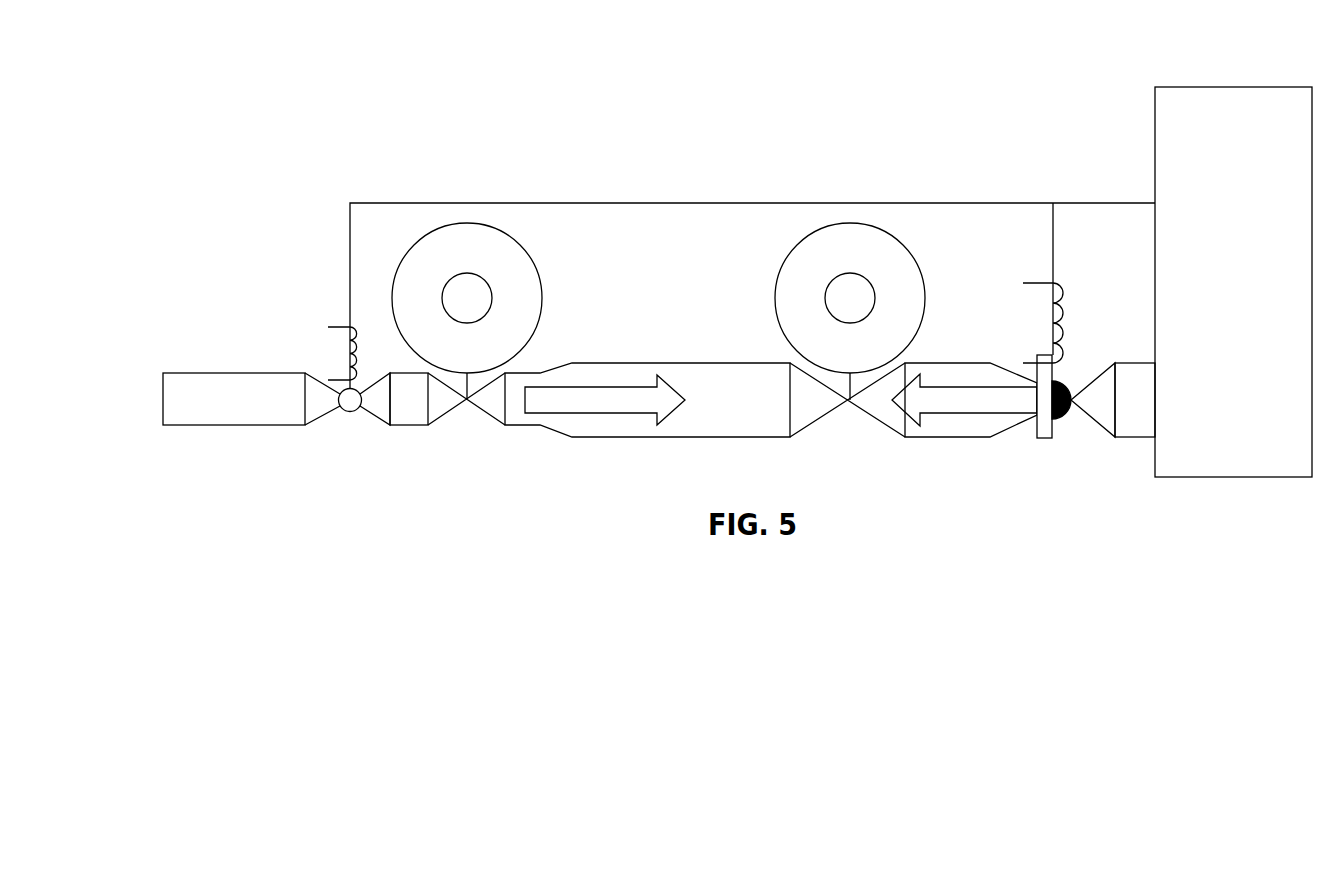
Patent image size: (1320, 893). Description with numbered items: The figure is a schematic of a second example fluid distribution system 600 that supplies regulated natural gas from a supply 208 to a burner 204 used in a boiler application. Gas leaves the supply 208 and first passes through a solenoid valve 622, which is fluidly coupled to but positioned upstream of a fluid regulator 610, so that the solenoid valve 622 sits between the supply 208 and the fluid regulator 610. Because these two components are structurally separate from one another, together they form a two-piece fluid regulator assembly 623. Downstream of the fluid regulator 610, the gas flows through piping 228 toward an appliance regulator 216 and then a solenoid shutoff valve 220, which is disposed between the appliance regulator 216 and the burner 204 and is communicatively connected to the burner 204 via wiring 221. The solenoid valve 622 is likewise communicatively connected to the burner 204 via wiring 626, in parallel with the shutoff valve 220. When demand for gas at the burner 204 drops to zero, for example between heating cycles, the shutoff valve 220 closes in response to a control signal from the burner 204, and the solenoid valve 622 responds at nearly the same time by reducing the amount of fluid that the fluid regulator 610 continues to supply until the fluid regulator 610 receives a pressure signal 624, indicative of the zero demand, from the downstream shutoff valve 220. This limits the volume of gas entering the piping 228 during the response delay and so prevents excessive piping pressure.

The fluid distribution system 600 is at (192, 103).
The two-piece fluid regulator assembly 623 is at (332, 298).
The fluid regulator 610 is at (468, 222).
The appliance regulator 216 is at (853, 222).
The piping 228 is at (625, 361).
The wiring 626 is at (993, 202).
The wiring 221 is at (1055, 217).
The pressure signal 624 is at (933, 392).
The solenoid valve 622 is at (350, 414).
The supply 208 is at (225, 427).
The shutoff valve 220 is at (1045, 446).
The burner 204 is at (1223, 481).